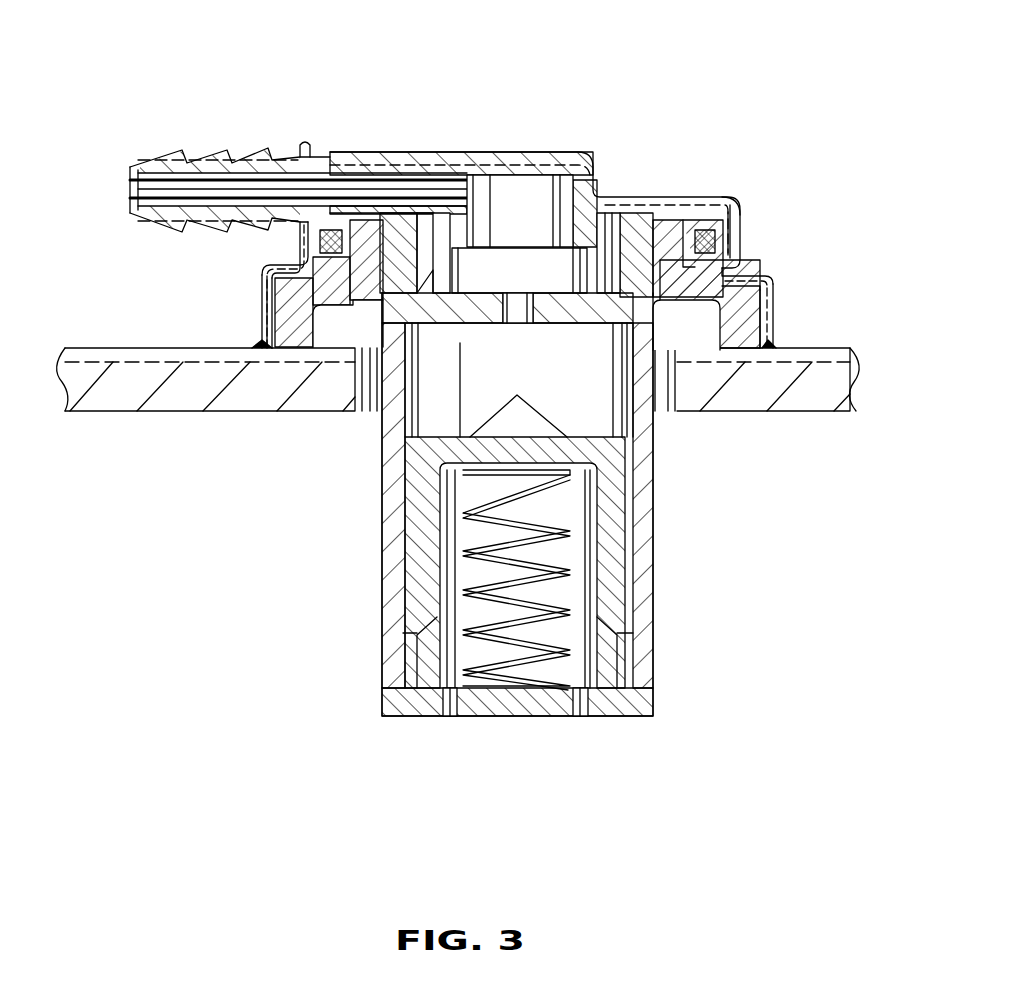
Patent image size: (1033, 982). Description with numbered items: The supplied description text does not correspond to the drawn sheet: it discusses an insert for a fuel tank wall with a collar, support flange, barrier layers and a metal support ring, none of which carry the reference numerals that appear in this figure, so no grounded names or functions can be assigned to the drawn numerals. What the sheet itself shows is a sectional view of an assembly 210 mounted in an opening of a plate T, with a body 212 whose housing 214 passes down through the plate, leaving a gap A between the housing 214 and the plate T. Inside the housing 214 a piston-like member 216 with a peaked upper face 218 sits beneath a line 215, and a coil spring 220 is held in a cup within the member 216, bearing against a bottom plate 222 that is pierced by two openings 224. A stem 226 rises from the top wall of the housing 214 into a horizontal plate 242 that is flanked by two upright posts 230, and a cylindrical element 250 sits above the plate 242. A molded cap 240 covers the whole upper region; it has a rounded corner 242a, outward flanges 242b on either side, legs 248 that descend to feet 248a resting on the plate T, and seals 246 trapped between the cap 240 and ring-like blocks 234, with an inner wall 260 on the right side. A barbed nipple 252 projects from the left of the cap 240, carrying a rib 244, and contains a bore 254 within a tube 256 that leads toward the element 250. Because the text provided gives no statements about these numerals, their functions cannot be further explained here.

The pressure switch assembly 210 is at (541, 90).
The switch body 212 is at (682, 496).
The housing 214 is at (645, 652).
The contact line 215 is at (512, 390).
The piston 216 is at (594, 437).
The diaphragm 218 is at (522, 396).
The spring 220 is at (570, 565).
The bottom plate 222 is at (383, 700).
The terminal openings 224 is at (586, 720).
The stem 226 is at (523, 325).
The posts 230 is at (437, 218).
The ring 234 is at (652, 325).
The cap 240 is at (700, 132).
The cap plate 242 is at (595, 253).
The cap corner 242a is at (737, 196).
The cap flange 242b is at (265, 290).
The rib 244 is at (362, 185).
The seal 246 is at (306, 249).
The leg 248 is at (224, 297).
The foot 248a is at (367, 213).
The filter 250 is at (545, 227).
The nipple 252 is at (163, 150).
The bore 254 is at (132, 182).
The tube 256 is at (145, 192).
The inner wall 260 is at (739, 205).
The gap A is at (660, 403).
The mounting plate T is at (795, 402).